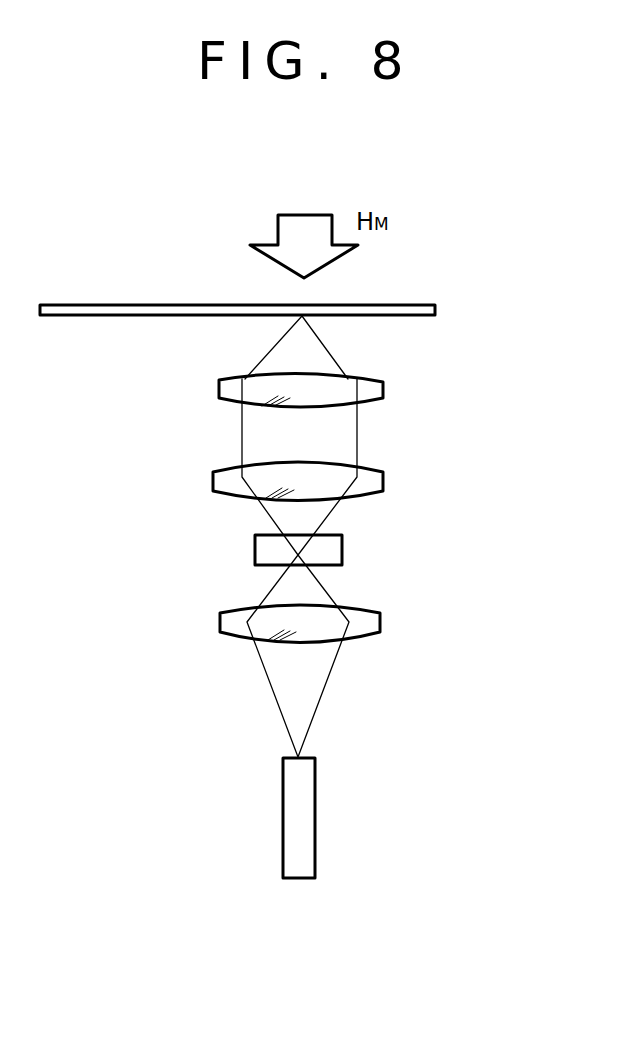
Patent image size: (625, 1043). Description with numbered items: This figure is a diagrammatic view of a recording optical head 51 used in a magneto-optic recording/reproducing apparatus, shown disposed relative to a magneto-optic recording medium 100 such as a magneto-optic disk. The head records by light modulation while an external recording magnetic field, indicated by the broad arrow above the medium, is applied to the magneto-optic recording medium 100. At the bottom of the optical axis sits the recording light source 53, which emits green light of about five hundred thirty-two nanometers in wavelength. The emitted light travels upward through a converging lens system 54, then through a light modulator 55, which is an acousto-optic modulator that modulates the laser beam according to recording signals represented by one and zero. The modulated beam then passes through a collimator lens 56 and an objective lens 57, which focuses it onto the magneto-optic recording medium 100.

The magneto-optic recording medium 100 is at (430, 305).
The objective lens 57 is at (384, 386).
The collimator lens 56 is at (383, 474).
The light modulator 55 is at (343, 550).
The converging lens system 54 is at (381, 628).
The recording optical head 51 is at (491, 728).
The recording light source 53 is at (316, 822).